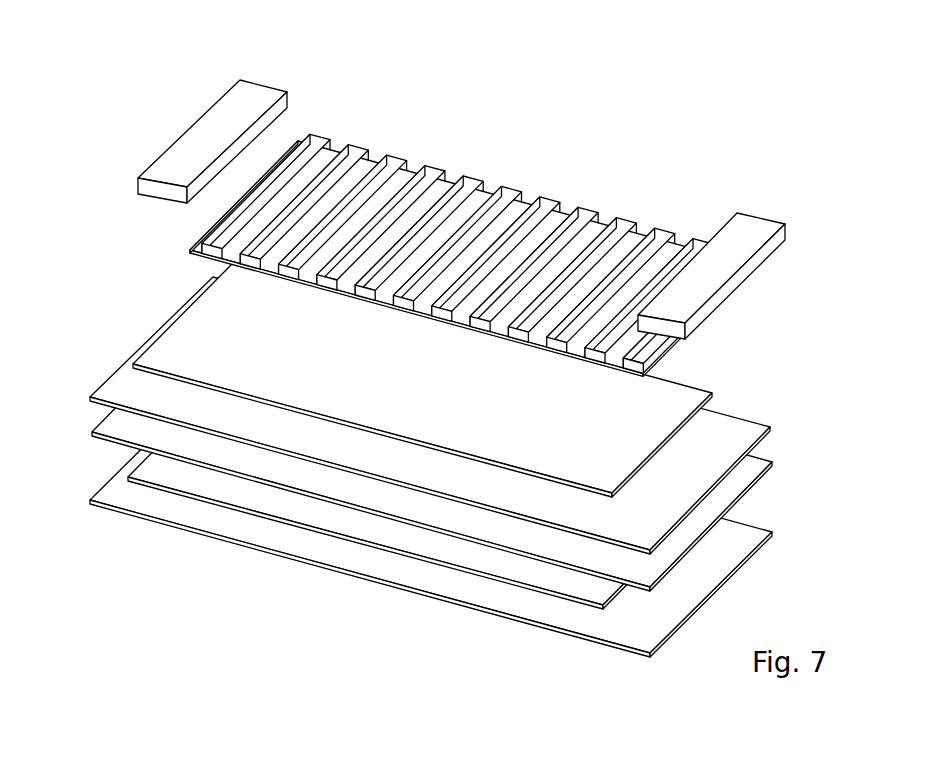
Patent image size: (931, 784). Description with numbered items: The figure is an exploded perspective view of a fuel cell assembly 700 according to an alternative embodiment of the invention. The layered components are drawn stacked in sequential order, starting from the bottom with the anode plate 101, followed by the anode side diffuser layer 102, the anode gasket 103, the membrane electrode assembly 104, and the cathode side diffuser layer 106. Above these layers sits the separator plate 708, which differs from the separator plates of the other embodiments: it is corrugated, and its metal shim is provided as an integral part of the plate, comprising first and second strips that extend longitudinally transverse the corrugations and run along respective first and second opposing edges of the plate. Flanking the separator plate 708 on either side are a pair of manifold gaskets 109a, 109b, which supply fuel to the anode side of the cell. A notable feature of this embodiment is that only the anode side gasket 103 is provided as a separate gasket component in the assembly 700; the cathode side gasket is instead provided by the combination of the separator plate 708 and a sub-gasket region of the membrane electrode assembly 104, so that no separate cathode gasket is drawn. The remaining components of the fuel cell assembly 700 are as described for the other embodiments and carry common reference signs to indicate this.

The fuel cell assembly 700 is at (607, 98).
The separator plate 708 is at (483, 193).
The manifold gasket 109a is at (748, 227).
The manifold gasket 109b is at (267, 98).
The cathode side diffuser layer 106 is at (648, 402).
The membrane electrode assembly (MEA) 104 is at (730, 433).
The anode gasket 103 is at (715, 499).
The anode side diffuser layer 102 is at (295, 505).
The anode plate 101 is at (697, 589).